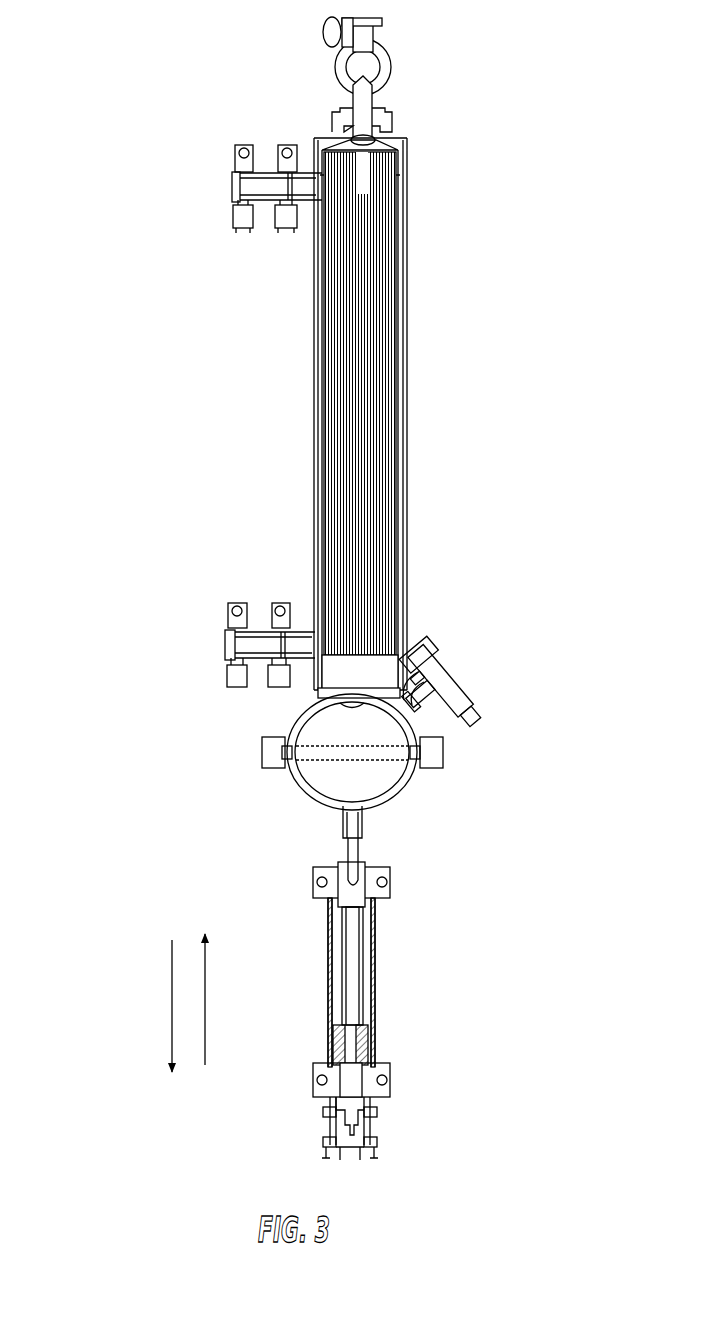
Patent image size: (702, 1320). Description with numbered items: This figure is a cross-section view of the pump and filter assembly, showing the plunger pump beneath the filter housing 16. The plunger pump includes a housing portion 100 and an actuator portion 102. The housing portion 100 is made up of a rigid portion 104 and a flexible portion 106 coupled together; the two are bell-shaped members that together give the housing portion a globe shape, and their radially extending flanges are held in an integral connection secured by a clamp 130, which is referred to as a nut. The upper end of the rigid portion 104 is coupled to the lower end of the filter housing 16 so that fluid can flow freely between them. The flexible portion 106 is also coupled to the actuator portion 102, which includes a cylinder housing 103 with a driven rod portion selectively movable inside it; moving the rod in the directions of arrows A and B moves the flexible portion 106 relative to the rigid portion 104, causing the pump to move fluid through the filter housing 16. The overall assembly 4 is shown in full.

The sampling device 4 is at (125, 470).
The filter housing 16 is at (407, 352).
The housing portion 100 is at (216, 752).
The actuator portion 102 is at (382, 933).
The cylinder housing 103 is at (376, 1040).
The rigid portion 104 is at (434, 665).
The flexible portion 106 is at (408, 812).
The clamp 130 is at (445, 757).